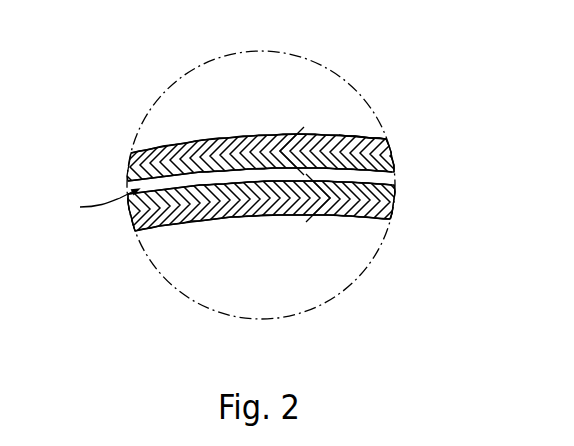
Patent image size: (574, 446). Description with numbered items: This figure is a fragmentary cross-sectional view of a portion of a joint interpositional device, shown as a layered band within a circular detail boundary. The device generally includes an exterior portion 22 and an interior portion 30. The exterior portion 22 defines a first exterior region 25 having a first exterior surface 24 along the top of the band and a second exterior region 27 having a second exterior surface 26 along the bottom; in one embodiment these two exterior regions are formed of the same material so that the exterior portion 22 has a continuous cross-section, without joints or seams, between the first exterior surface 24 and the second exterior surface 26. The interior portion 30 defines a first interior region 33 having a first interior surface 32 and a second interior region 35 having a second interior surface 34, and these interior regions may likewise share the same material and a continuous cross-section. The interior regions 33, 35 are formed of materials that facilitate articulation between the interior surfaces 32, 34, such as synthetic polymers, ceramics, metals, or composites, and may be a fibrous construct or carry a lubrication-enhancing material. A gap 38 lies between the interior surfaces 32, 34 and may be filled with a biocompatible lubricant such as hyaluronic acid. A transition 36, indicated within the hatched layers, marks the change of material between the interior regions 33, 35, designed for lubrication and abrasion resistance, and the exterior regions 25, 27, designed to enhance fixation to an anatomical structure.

The exterior portion 22 is at (260, 191).
The first exterior surface 24 is at (272, 134).
The first exterior region 25 is at (173, 146).
The second exterior surface 26 is at (248, 229).
The second exterior region 27 is at (272, 216).
The interior portion 30 is at (403, 183).
The first interior surface 32 is at (396, 167).
The first interior region 33 is at (360, 139).
The second interior surface 34 is at (392, 220).
The second interior region 35 is at (142, 231).
The transition 36 is at (289, 135).
The gap 38 is at (98, 205).